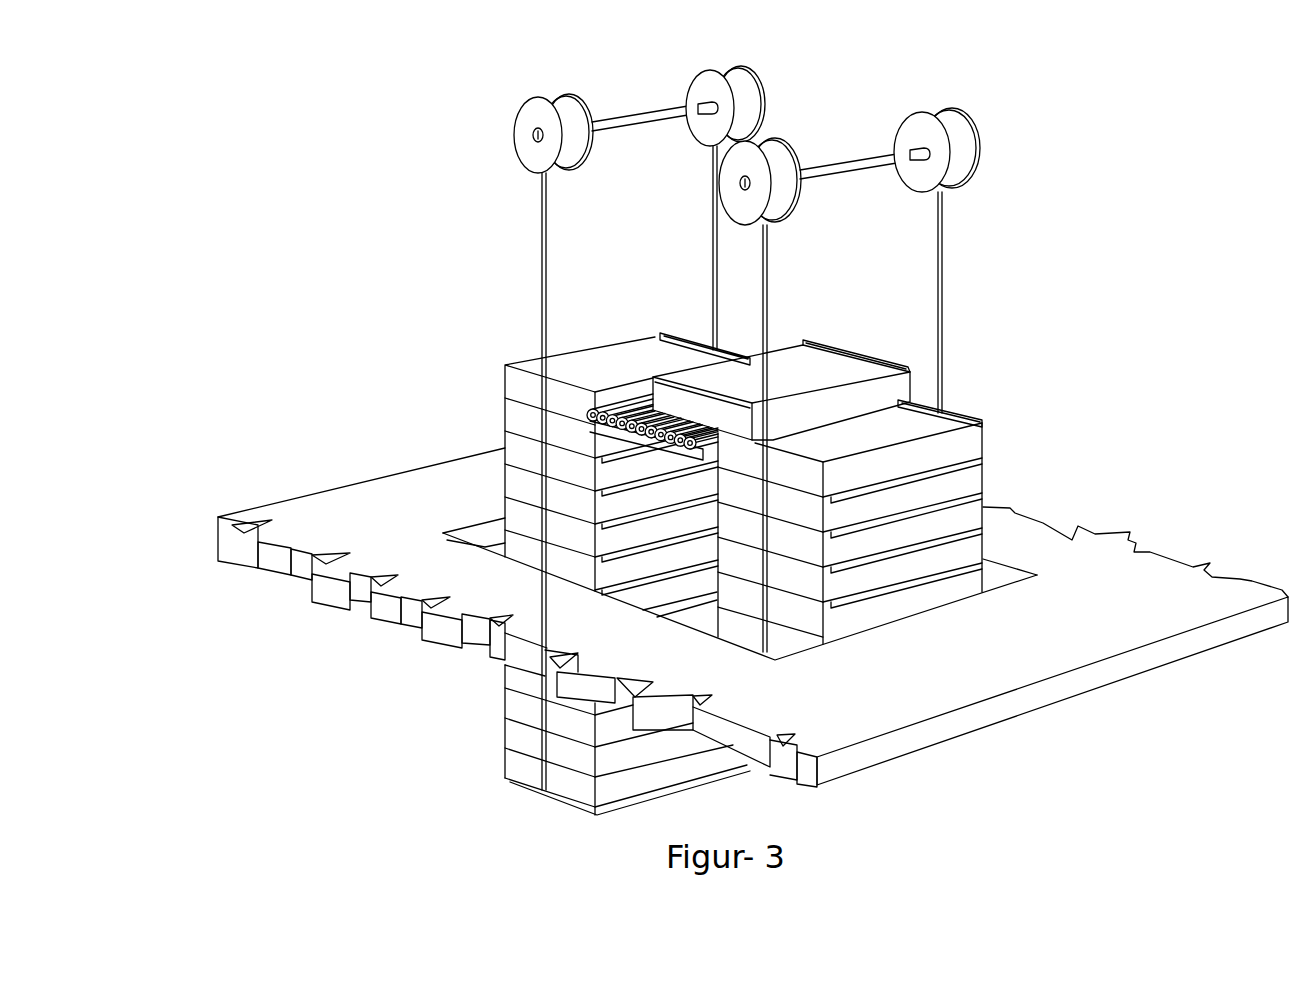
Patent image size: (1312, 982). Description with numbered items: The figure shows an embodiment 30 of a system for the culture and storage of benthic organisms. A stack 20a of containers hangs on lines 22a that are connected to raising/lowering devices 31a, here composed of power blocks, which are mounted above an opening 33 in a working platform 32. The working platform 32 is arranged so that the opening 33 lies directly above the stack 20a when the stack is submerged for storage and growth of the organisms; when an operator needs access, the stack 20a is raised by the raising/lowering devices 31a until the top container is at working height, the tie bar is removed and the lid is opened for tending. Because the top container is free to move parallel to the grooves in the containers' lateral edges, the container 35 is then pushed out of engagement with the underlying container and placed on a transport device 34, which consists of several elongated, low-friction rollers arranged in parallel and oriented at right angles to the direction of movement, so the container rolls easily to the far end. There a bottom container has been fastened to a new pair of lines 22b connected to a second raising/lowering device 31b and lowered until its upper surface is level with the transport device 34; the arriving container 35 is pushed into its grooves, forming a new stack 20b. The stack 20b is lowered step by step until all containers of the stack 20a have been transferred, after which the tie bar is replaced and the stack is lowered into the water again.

The system embodiment 30 is at (1160, 288).
The raising/lowering devices 31a is at (747, 72).
The raising/lowering device 31b is at (967, 125).
The lines 22a is at (533, 249).
The new pair of lines 22b is at (950, 282).
The stack of containers 20a is at (495, 385).
The new stack 20b is at (995, 441).
The transport device 34 is at (590, 421).
The container 35 is at (808, 366).
The working platform 32 is at (1078, 638).
The opening 33 is at (997, 585).